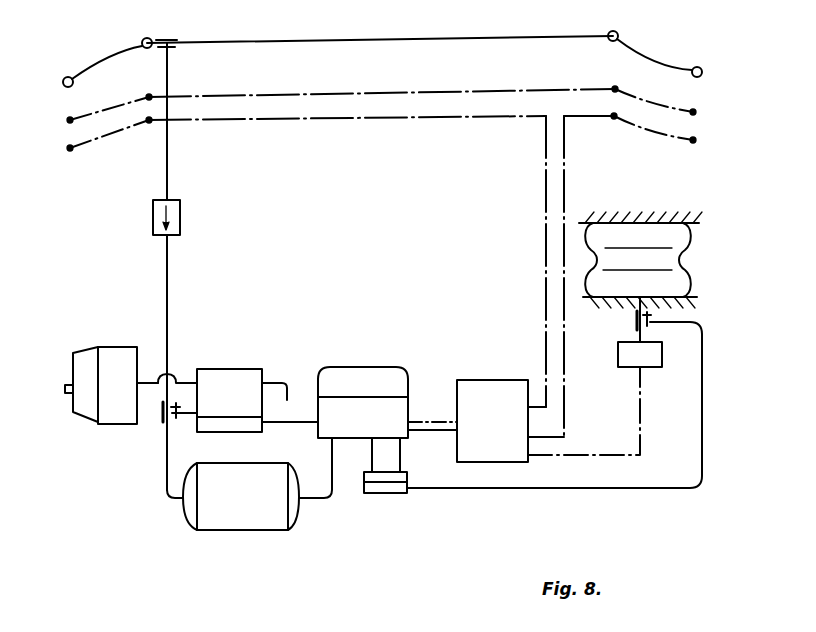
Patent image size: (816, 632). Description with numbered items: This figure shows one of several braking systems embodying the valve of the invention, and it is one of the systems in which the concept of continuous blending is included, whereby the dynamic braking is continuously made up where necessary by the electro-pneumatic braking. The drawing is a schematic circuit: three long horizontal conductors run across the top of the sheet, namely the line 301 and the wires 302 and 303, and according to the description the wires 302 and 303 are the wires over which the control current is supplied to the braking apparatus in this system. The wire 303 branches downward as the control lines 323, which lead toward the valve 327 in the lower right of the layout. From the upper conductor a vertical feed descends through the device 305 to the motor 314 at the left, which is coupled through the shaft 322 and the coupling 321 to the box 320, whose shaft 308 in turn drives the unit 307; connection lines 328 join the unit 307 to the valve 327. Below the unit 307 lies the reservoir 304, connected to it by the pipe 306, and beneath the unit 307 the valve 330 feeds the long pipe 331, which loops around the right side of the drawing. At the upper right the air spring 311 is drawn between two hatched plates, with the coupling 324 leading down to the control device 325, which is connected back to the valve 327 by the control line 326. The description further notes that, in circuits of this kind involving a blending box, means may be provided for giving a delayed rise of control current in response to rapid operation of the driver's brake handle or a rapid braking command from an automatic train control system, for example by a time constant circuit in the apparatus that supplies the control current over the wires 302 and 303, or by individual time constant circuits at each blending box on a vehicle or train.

The power supply line 301 is at (425, 35).
The wire 302 is at (428, 87).
The wire 303 is at (430, 151).
The reservoir tank 304 is at (332, 561).
The control valve 305 is at (247, 220).
The pipe 306 is at (318, 500).
The compressor 307 is at (417, 350).
The shaft 308 is at (283, 423).
The air spring 311 is at (614, 232).
The motor 314 is at (110, 347).
The gear box 320 is at (266, 353).
The coupling 321 is at (180, 415).
The shaft 322 is at (185, 380).
The control lines 323 is at (535, 300).
The coupling 324 is at (636, 310).
The control device 325 is at (623, 369).
The control line 326 is at (602, 456).
The valve 327 is at (520, 350).
The connection lines 328 is at (443, 429).
The valve 330 is at (387, 498).
The pipe 331 is at (527, 490).